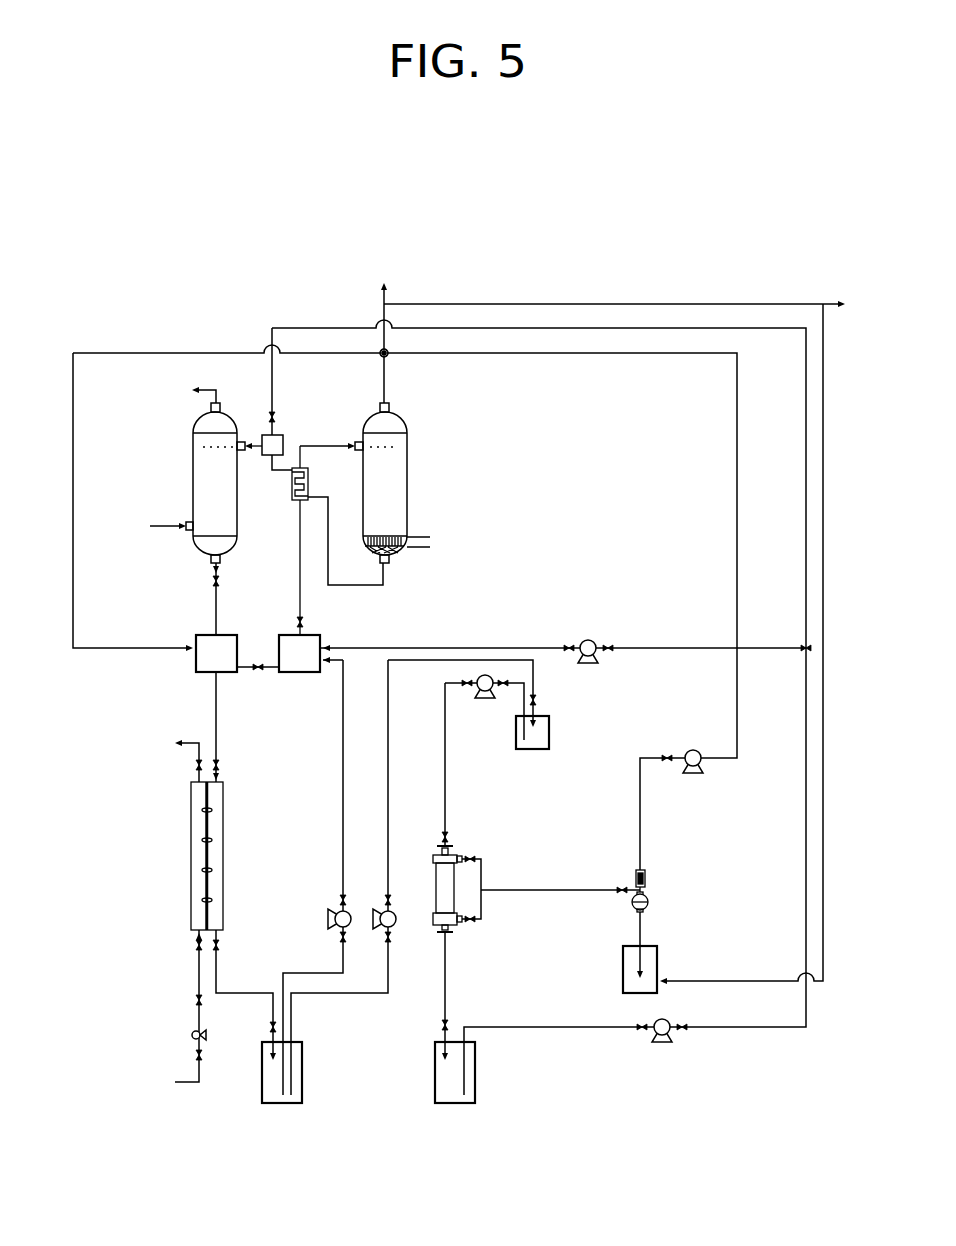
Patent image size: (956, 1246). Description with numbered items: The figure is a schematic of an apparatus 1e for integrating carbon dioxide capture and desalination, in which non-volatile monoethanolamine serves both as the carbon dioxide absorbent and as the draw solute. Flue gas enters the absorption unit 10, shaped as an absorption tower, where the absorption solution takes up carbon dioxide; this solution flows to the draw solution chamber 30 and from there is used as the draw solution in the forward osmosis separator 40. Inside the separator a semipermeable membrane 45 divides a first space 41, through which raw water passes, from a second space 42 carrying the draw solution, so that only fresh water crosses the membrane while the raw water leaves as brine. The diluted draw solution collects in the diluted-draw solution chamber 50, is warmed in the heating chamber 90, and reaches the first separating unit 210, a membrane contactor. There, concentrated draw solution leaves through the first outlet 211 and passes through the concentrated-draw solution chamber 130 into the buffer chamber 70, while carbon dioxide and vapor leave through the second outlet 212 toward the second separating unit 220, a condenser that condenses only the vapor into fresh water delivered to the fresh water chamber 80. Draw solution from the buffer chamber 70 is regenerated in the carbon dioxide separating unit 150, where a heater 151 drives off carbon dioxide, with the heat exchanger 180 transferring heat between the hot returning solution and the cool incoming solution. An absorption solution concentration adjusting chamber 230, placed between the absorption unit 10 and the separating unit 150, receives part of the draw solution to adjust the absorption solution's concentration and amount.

The apparatus for integrating carbon dioxide capture and desalination 1e is at (710, 216).
The absorption unit 10 is at (185, 475).
The draw solution chamber 30 is at (196, 628).
The forward osmosis separator 40 is at (210, 827).
The first space 41 is at (198, 890).
The second space 42 is at (216, 890).
The semipermeable membrane 45 is at (210, 823).
The diluted-draw solution chamber 50 is at (310, 1074).
The buffer chamber 70 is at (280, 628).
The fresh water chamber 80 is at (665, 961).
The heating chamber 90 is at (508, 731).
The concentrated-draw solution chamber 130 is at (483, 1076).
The carbon dioxide separating unit 150 is at (422, 503).
The heater 151 is at (415, 550).
The heat exchanger 180 is at (292, 495).
The first separating unit 210 is at (472, 925).
The first outlet 211 is at (450, 933).
The second outlet 212 is at (460, 853).
The second separating unit 220 is at (656, 902).
The absorption solution concentration adjusting chamber 230 is at (261, 428).